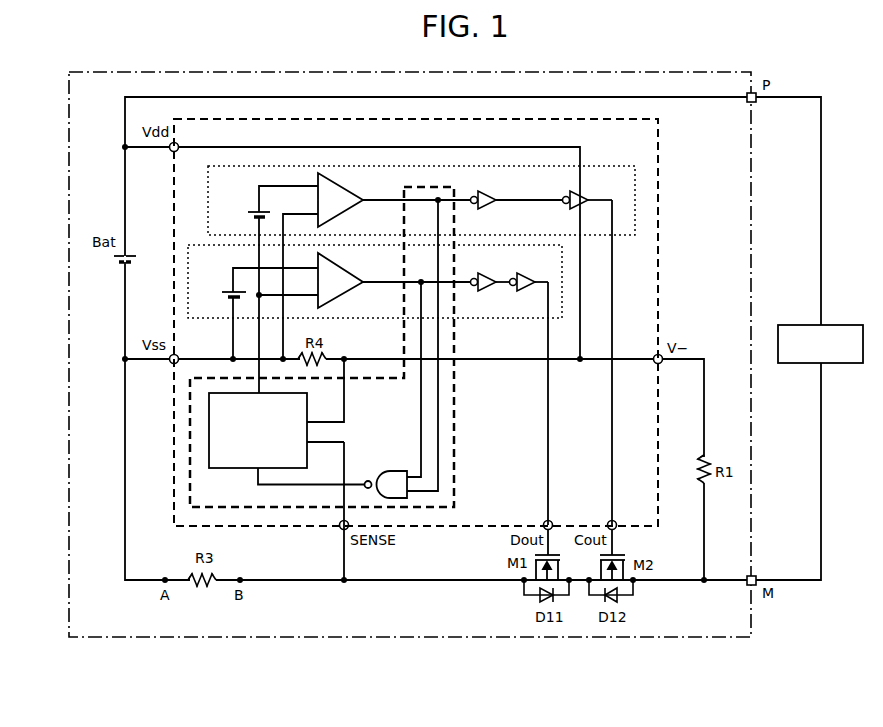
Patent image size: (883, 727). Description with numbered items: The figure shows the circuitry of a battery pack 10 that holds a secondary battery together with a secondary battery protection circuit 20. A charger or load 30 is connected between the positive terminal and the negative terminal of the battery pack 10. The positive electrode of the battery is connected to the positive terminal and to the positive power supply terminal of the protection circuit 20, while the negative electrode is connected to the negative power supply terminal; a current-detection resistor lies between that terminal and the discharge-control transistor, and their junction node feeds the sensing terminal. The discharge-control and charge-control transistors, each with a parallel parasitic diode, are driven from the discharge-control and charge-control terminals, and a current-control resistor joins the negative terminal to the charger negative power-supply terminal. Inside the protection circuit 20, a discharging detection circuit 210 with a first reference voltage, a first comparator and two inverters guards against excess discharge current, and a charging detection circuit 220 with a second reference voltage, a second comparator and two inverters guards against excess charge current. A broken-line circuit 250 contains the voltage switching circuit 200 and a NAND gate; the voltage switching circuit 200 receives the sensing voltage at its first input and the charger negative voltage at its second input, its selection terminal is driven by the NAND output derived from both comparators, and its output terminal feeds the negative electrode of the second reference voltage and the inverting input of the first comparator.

The battery pack 10 is at (703, 72).
The secondary battery protection circuit 20 is at (660, 152).
The charger or load 30 is at (843, 325).
The voltage switching circuit 200 is at (232, 469).
The discharging detection circuit 210 is at (490, 319).
The charging detection circuit 220 is at (628, 236).
The circuit including the voltage switching circuit and a NAND 250 is at (455, 413).